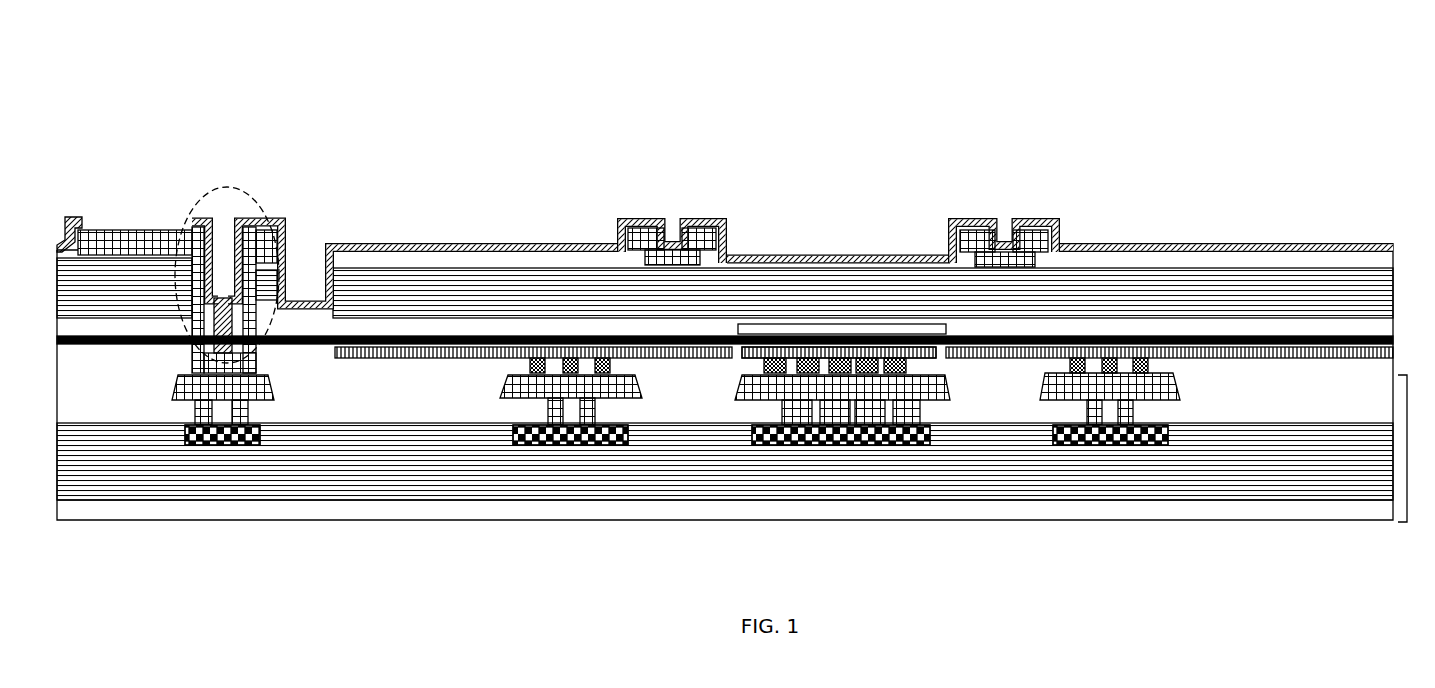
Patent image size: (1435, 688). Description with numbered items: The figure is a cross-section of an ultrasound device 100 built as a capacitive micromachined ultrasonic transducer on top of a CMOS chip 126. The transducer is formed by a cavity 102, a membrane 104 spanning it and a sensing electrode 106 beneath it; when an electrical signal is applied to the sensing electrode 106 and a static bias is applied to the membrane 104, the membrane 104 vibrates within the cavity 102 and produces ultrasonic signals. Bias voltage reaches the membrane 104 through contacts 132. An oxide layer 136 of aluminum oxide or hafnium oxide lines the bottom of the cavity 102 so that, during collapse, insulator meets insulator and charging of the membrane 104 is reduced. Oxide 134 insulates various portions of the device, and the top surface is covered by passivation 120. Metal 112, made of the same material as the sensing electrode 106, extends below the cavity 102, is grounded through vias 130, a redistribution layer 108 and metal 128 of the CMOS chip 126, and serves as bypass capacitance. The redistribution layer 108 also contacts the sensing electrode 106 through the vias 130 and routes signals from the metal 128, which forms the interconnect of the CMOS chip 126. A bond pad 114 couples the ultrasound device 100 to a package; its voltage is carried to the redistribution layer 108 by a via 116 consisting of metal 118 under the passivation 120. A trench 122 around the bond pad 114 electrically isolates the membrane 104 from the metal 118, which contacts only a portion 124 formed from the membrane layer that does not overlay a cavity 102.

The ultrasound device 100 is at (195, 90).
The cavity 102 is at (858, 330).
The membrane 104 is at (790, 287).
The sensing electrode 106 is at (903, 358).
The redistribution layer 108 is at (210, 392).
The metal 112 is at (598, 347).
The bond pad 114 is at (133, 228).
The via 116 is at (225, 185).
The metal 118 is at (250, 280).
The passivation 120 is at (277, 220).
The trench 122 is at (307, 248).
The portion 124 is at (128, 288).
The CMOS chip 126 is at (1410, 452).
The metal 128 is at (247, 442).
The vias 130 is at (918, 372).
The contacts 132 is at (675, 262).
The oxide 134 is at (343, 390).
The oxide layer 136 is at (777, 348).